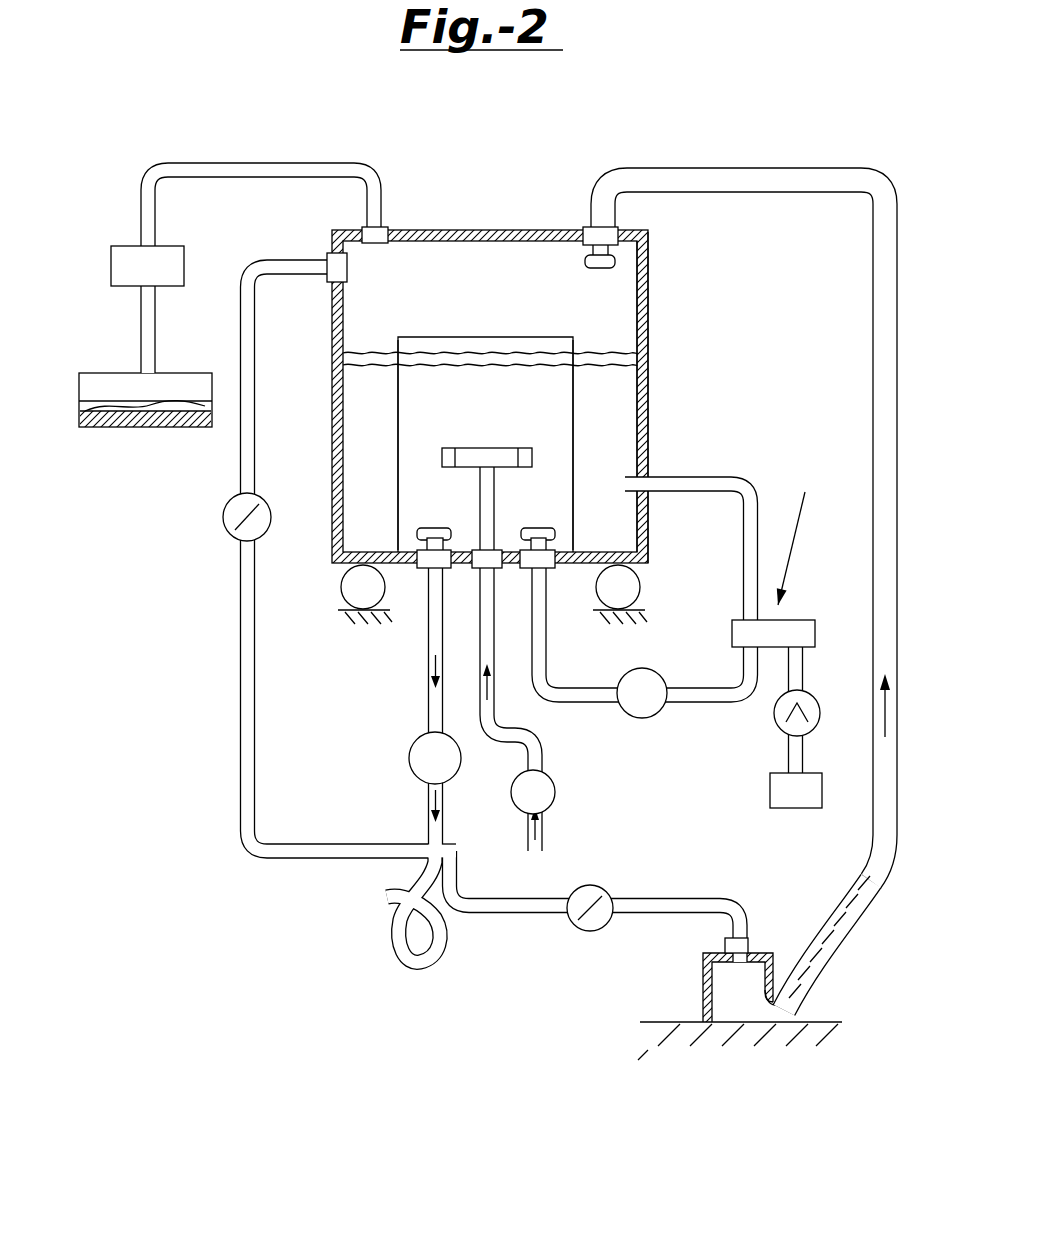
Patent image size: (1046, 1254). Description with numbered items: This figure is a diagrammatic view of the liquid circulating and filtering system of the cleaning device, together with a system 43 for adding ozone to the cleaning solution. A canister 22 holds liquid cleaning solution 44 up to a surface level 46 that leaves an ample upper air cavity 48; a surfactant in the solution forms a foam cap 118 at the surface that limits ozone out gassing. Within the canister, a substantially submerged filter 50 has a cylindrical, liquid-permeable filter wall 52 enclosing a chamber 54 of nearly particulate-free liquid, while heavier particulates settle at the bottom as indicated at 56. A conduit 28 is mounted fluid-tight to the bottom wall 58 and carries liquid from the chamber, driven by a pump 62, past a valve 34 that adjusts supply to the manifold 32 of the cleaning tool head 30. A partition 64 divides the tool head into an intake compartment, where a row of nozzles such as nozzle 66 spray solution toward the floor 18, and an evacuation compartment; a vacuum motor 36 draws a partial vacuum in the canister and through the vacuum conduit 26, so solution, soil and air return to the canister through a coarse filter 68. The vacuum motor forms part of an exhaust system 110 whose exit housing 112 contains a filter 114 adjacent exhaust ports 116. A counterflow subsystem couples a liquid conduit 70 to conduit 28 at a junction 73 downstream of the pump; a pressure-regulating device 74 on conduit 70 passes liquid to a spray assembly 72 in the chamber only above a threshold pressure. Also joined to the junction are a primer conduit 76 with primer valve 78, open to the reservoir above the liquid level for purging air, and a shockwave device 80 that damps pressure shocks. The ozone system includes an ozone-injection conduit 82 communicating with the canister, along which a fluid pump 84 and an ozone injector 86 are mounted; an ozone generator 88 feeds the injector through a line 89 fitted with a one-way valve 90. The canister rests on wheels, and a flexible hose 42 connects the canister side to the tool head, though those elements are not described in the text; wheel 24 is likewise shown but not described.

The floor 18 is at (822, 1022).
The canister 22 is at (405, 230).
The wheel 24 is at (342, 592).
The vacuum conduit 26 is at (897, 450).
The conduit 28 is at (428, 694).
The cleaning tool head 30 is at (703, 1002).
The manifold 32 is at (748, 943).
The valve 34 is at (600, 886).
The vacuum motor 36 is at (140, 254).
The flexible hose 42 is at (838, 925).
The system 43 is at (798, 535).
The liquid cleaning solution 44 is at (640, 408).
The surface level 46 is at (640, 362).
The upper air cavity 48 is at (482, 232).
The filter 50 is at (420, 337).
The filter wall 52 is at (575, 425).
The chamber 54 is at (395, 425).
The settled heavier particulates 56 is at (612, 552).
The bottom wall 58 is at (640, 570).
The pump 62 is at (410, 766).
The partition 64 is at (772, 1003).
The nozzle 66 is at (428, 528).
The coarse filter 68 is at (597, 268).
The liquid conduit 70 is at (494, 742).
The spray assembly 72 is at (468, 448).
The junction 73 is at (432, 840).
The pressure-regulating device 74 is at (555, 785).
The primer conduit 76 is at (260, 355).
The primer valve 78 is at (238, 538).
The shockwave device 80 is at (392, 960).
The ozone-injection conduit 82 is at (688, 476).
The fluid pump 84 is at (645, 718).
The ozone injector 86 is at (815, 635).
The ozone generator 88 is at (770, 800).
The line 89 is at (803, 680).
The one-way valve 90 is at (815, 732).
The exhaust system 110 is at (252, 160).
The exit housing 112 is at (130, 376).
The filter 114 is at (78, 408).
The exhaust ports 116 is at (118, 430).
The foam cap 118 is at (593, 352).